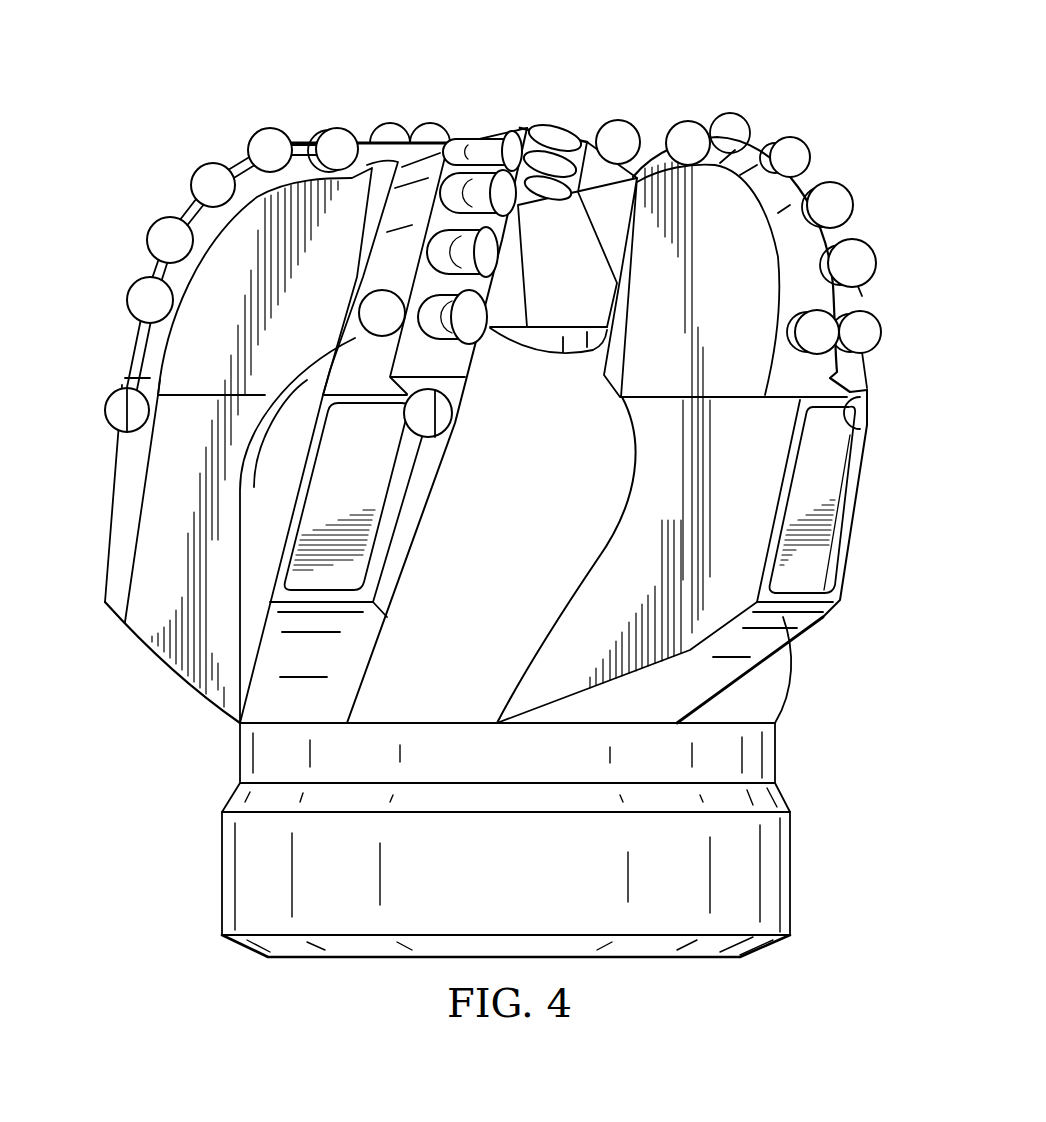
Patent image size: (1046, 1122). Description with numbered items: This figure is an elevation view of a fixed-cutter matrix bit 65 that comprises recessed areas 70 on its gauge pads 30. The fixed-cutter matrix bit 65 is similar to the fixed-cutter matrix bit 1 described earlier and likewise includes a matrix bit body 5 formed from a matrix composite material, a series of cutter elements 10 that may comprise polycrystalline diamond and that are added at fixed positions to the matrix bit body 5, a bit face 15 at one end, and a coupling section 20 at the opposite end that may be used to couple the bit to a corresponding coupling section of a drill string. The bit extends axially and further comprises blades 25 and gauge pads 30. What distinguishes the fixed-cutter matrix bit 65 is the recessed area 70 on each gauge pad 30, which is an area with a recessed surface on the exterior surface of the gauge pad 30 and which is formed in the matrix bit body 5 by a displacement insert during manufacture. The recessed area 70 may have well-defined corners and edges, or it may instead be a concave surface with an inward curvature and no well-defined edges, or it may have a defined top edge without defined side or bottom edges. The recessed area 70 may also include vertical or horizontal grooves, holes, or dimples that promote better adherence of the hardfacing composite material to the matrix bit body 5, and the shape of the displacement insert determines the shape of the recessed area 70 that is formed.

The fixed-cutter matrix bit 1 is at (128, 848).
The matrix bit body 5 is at (917, 370).
The cutter elements 10 is at (338, 128).
The bit face 15 is at (418, 82).
The coupling section 20 is at (282, 997).
The blades 25 is at (170, 667).
The gauge pads 30 is at (112, 520).
The fixed-cutter matrix bit 65 is at (858, 808).
The recessed area 70 is at (385, 473).